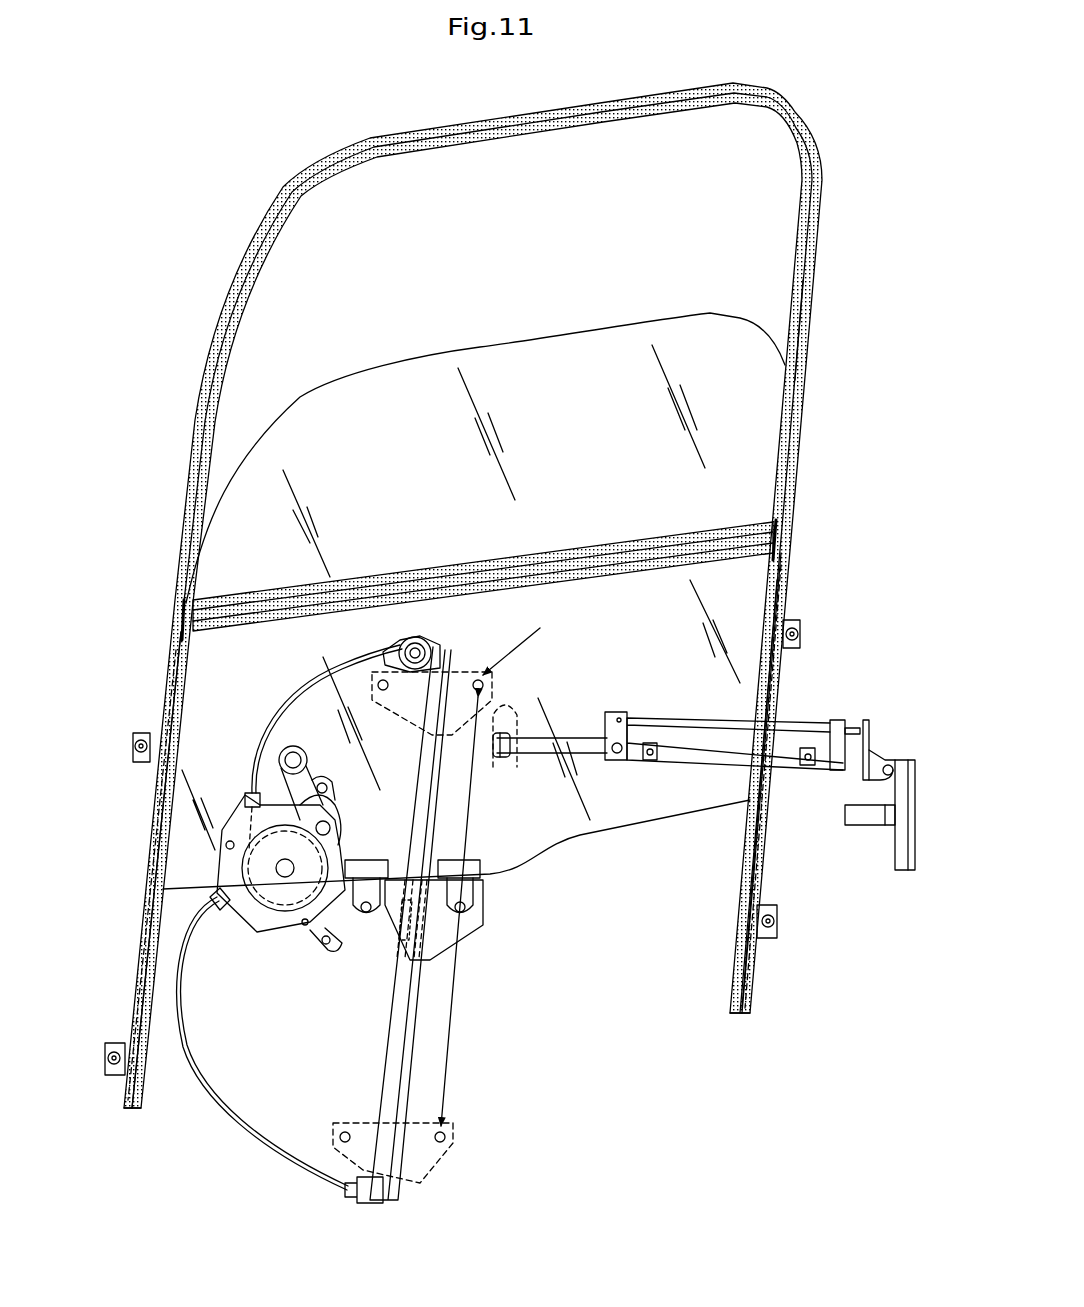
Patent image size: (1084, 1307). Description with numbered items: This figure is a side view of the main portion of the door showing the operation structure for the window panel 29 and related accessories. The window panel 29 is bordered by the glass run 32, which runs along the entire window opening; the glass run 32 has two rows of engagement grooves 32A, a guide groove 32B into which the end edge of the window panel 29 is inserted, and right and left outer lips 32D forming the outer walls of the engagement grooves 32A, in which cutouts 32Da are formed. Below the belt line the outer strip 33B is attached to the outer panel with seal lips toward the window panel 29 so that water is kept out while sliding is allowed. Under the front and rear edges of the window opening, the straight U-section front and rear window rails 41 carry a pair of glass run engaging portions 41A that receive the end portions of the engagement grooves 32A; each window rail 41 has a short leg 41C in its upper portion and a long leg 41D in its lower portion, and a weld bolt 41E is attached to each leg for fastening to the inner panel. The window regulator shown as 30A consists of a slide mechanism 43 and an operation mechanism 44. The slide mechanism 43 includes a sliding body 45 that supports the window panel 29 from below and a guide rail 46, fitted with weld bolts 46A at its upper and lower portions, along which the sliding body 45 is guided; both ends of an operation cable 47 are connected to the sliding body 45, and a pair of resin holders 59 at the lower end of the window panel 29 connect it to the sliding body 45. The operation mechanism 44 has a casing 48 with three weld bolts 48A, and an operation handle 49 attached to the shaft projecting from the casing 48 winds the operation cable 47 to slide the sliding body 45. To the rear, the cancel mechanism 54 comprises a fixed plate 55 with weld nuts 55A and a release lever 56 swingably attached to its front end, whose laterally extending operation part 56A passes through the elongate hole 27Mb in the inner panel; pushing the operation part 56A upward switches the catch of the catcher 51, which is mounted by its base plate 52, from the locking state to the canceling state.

The glass run 32 is at (344, 146).
The outer lip 32D is at (258, 240).
The cutout 32Da is at (780, 540).
The guide groove 32B is at (780, 434).
The engagement groove 32A is at (750, 995).
The outer strip 33B is at (560, 545).
The window panel 29 is at (505, 338).
The window rail 41 is at (755, 845).
The glass run engaging portion 41A is at (737, 958).
The short leg 41C is at (800, 630).
The long leg 41D is at (775, 940).
The weld bolt 41E is at (800, 636).
The cancel mechanism 54 is at (791, 718).
The window regulator 30A is at (531, 862).
The guide rail 46 is at (375, 1012).
The weld bolt 46A is at (460, 680).
The slide mechanism 43 is at (470, 936).
The holder 59 is at (365, 858).
The sliding body 45 is at (372, 918).
The operation mechanism 44 is at (260, 932).
The casing 48 is at (246, 910).
The weld bolt 48A is at (325, 785).
The operation handle 49 is at (283, 752).
The operation cable 47 is at (325, 693).
The elongate hole for release lever 27Mb is at (520, 700).
The release lever 56 is at (543, 760).
The operation part 56A is at (501, 760).
The fixed plate 55 is at (692, 765).
The weld nut 55A is at (647, 760).
The catcher 51 is at (885, 753).
The base plate 52 is at (905, 870).